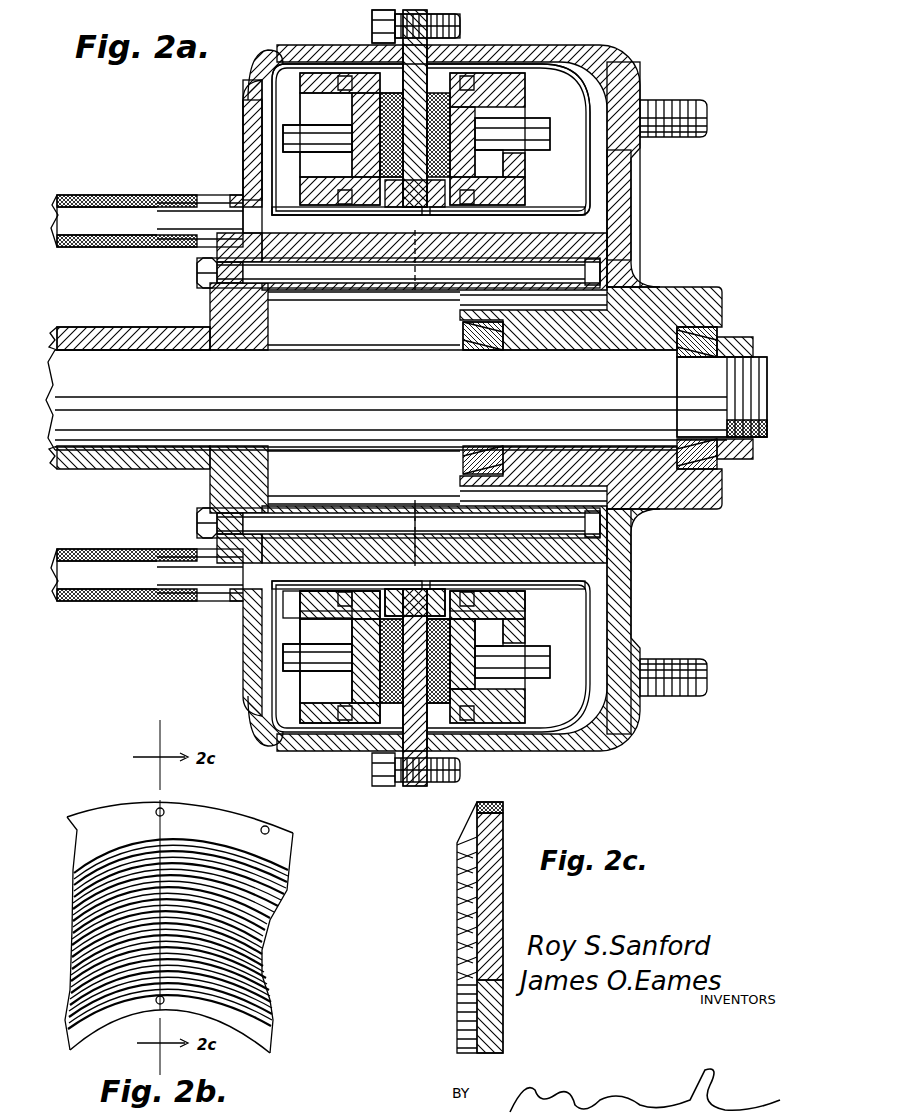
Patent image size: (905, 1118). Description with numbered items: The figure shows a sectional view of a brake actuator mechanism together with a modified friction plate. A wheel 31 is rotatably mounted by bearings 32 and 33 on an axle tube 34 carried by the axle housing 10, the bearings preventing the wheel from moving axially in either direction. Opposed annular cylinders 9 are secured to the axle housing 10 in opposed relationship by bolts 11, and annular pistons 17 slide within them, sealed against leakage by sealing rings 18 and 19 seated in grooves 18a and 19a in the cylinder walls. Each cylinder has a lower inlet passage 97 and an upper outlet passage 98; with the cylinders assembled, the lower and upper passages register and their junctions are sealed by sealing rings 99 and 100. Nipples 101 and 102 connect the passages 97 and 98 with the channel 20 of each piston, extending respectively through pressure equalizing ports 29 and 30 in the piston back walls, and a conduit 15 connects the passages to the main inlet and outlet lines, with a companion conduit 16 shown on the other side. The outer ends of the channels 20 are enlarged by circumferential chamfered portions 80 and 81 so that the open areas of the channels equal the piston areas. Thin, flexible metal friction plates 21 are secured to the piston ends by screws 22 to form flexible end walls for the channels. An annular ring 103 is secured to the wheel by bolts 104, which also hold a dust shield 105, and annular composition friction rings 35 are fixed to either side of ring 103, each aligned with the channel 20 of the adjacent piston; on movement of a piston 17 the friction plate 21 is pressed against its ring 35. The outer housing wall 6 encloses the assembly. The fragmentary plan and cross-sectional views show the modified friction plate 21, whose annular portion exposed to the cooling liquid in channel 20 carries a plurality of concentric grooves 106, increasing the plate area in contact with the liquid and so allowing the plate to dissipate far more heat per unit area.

In FIG. 2A, the clutch housing 6 is at (625, 82).
In FIG. 2A, the annular cylinder 9 is at (624, 176).
In FIG. 2A, the axle housing 10 is at (136, 334).
In FIG. 2A, the bolt 11 is at (190, 530).
In FIG. 2A, the inlet conduit 15 is at (213, 600).
In FIG. 2A, the upper conduit pipe 16 is at (212, 198).
In FIG. 2A, the annular piston 17 is at (470, 73).
In FIG. 2A, the sealing ring 18 is at (350, 608).
In FIG. 2A, the groove 18a is at (312, 598).
In FIG. 2A, the sealing ring 19 is at (352, 740).
In FIG. 2A, the groove 19a is at (310, 752).
In FIG. 2A, the channel 20 is at (505, 722).
In FIG. 2A, the friction plate 21 is at (420, 712).
In FIG. 2B, the friction plate 21 is at (282, 848).
In FIG. 2C, the friction plate 21 is at (500, 836).
In FIG. 2A, the screw 22 is at (446, 205).
In FIG. 2A, the pressure equalizing port 29 is at (310, 642).
In FIG. 2A, the pressure equalizing port 30 is at (340, 170).
In FIG. 2A, the wheel 31 is at (628, 592).
In FIG. 2A, the bearing 32 is at (470, 350).
In FIG. 2A, the bearing 33 is at (682, 345).
In FIG. 2A, the axle tube 34 is at (760, 368).
In FIG. 2A, the annular friction ring 35 is at (450, 600).
In FIG. 2A, the chamfered portion 80 is at (365, 636).
In FIG. 2A, the chamfered portion 81 is at (465, 695).
In FIG. 2A, the lower inlet passage 97 is at (509, 581).
In FIG. 2A, the upper outlet passage 98 is at (502, 231).
In FIG. 2A, the sealing ring 99 is at (440, 593).
In FIG. 2A, the sealing ring 100 is at (413, 588).
In FIG. 2A, the nipple 101 is at (555, 692).
In FIG. 2A, the nipple 102 is at (300, 145).
In FIG. 2A, the annular ring 103 is at (430, 12).
In FIG. 2A, the bolt 104 is at (372, 20).
In FIG. 2A, the dust shield 105 is at (270, 72).
In FIG. 2C, the dust shield 105 is at (467, 857).
In FIG. 2B, the groove 106 is at (262, 946).